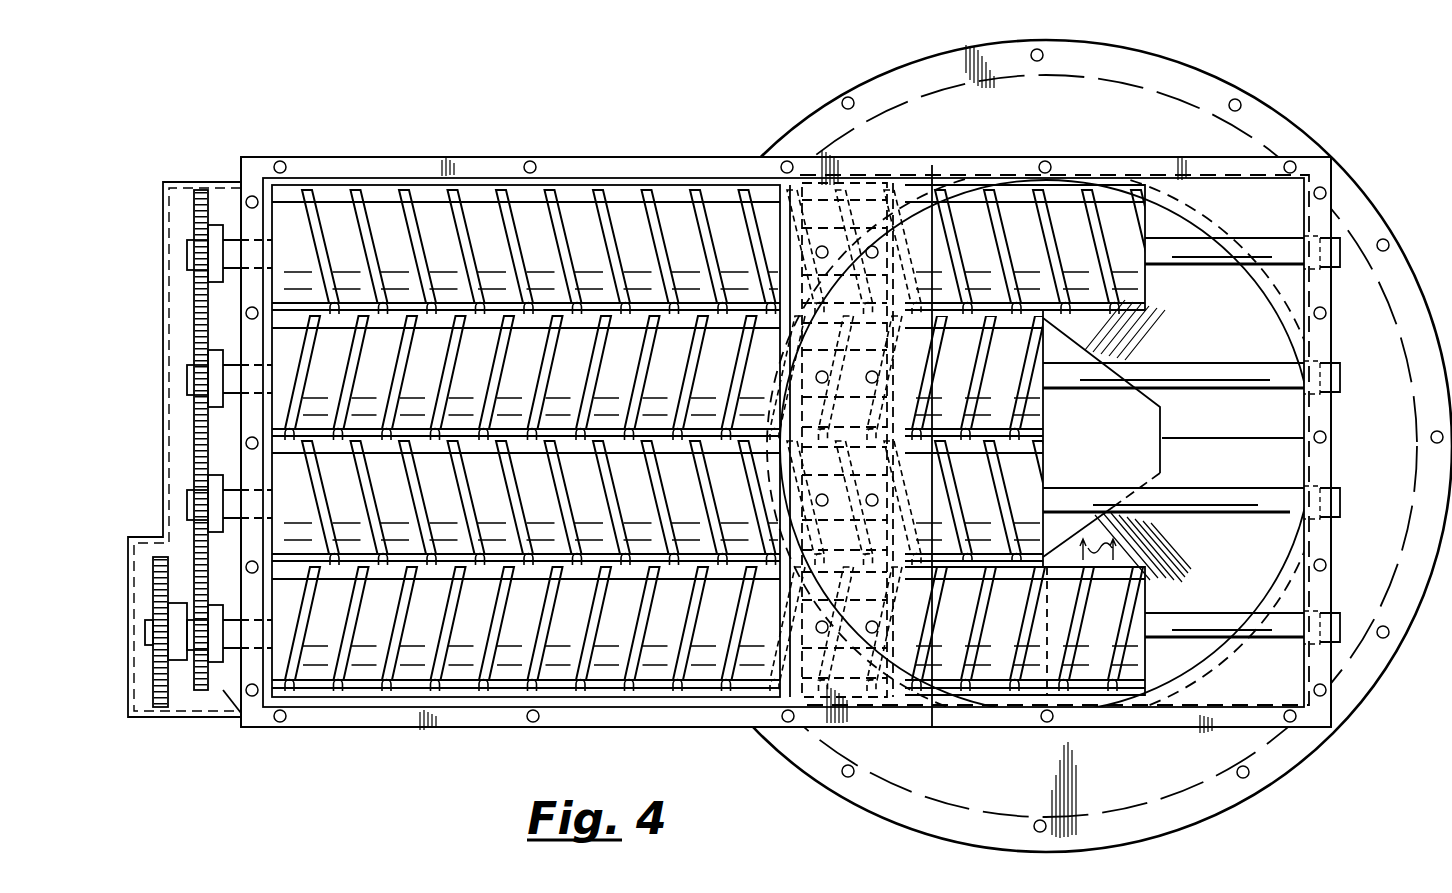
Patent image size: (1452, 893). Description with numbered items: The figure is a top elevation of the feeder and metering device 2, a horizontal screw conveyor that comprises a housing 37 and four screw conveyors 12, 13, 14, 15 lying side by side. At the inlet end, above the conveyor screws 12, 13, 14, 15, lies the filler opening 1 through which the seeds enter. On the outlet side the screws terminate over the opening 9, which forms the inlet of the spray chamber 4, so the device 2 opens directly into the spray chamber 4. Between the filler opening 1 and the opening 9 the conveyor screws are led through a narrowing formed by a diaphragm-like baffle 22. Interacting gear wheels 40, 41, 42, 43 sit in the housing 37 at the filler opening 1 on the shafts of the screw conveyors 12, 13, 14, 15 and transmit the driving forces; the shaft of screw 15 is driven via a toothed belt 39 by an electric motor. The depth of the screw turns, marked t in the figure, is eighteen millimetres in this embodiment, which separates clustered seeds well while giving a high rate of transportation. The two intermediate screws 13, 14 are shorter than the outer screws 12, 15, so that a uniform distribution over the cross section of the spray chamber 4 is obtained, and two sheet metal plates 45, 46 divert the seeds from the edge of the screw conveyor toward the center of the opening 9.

The filler opening 1 is at (432, 186).
The feeder and metering device 2 is at (745, 140).
The spray chamber 4 is at (1135, 86).
The opening 9 is at (1152, 427).
The screw conveyor 12 is at (579, 205).
The screw conveyor 13 is at (622, 335).
The screw conveyor 14 is at (507, 552).
The screw conveyor 15 is at (456, 688).
The diaphragm-like baffle 22 is at (903, 165).
The housing 37 is at (1290, 156).
The toothed belt 39 is at (153, 708).
The gear wheel 40 is at (197, 216).
The gear wheel 41 is at (197, 343).
The gear wheel 42 is at (197, 457).
The gear wheel 43 is at (204, 692).
The sheet metal plate 45 is at (1163, 477).
The sheet metal plate 46 is at (1128, 352).